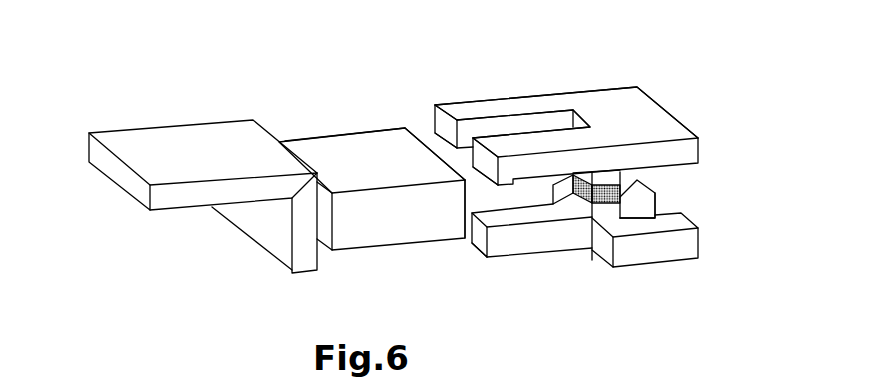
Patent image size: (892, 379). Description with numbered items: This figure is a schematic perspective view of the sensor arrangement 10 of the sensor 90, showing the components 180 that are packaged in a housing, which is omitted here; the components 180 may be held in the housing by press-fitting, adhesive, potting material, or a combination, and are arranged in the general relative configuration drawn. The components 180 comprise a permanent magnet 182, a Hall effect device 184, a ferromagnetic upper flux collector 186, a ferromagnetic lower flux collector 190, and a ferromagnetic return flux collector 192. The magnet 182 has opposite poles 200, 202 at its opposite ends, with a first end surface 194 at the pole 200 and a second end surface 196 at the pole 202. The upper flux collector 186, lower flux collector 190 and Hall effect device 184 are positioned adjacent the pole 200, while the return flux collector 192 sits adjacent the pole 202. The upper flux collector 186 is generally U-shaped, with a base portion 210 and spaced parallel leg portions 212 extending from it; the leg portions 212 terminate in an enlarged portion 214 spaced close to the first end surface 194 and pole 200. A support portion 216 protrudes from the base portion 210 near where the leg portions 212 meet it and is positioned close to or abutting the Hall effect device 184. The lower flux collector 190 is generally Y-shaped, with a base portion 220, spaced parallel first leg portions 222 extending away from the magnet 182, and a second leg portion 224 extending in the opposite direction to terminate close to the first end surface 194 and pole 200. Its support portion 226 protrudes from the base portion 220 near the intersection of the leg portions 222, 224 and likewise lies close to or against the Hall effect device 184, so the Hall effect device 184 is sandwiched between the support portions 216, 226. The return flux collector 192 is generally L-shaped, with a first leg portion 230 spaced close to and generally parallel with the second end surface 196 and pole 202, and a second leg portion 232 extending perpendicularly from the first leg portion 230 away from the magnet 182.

The electronic assembly 10 is at (432, 308).
The sensor 90 is at (470, 293).
The components 180 is at (517, 297).
The permanent magnet 182 is at (362, 157).
The Hall effect device 184 is at (648, 233).
The upper flux collector 186 is at (632, 128).
The lower flux collector 190 is at (682, 242).
The return flux collector 192 is at (180, 150).
The first end surface 194 is at (486, 203).
The second end surface 196 is at (320, 237).
The pole 200 is at (415, 128).
The pole 202 is at (310, 150).
The base portion 210 is at (600, 112).
The leg portions 212 is at (538, 142).
The enlarged portion 214 is at (483, 155).
The support portion 216 is at (612, 175).
The base portion 220 is at (622, 232).
The first leg portions 222 is at (680, 217).
The second leg portion 224 is at (530, 238).
The support portion 226 is at (580, 207).
The first leg portion 230 is at (262, 222).
The second leg portion 232 is at (153, 163).